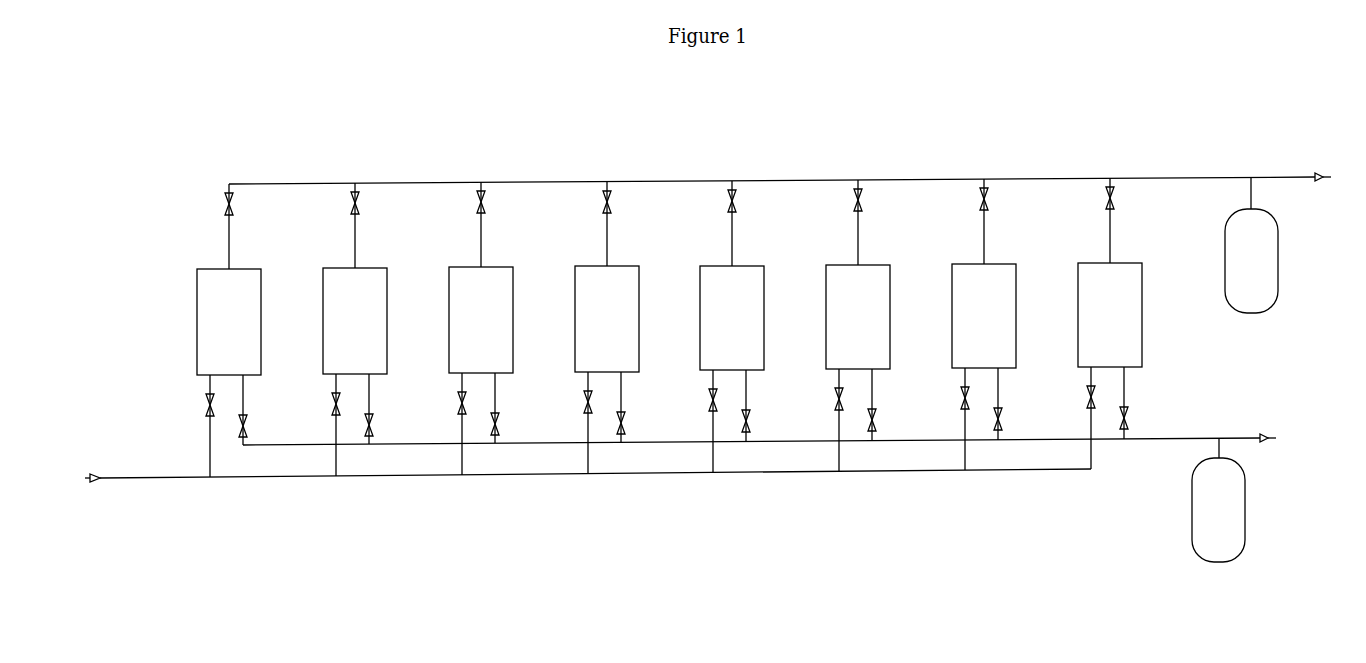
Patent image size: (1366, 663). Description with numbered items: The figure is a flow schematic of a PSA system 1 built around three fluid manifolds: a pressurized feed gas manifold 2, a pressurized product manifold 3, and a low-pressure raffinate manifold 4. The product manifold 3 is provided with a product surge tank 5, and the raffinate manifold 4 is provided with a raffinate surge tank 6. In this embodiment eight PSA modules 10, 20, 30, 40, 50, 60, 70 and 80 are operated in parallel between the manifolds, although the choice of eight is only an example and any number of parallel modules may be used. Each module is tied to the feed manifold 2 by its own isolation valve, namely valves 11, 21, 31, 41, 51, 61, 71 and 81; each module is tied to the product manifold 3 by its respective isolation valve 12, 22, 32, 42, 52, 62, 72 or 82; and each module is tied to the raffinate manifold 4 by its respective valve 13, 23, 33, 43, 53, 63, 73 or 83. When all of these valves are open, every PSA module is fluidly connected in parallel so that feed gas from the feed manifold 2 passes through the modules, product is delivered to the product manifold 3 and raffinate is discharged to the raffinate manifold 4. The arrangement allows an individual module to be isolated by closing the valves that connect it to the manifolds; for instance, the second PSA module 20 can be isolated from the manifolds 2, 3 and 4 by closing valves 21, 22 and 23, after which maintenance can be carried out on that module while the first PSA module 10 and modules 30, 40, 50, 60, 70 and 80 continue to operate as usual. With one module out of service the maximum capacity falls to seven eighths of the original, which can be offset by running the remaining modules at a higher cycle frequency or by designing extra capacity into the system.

The PSA system 1 is at (165, 146).
The pressurized feed gas manifold 2 is at (577, 478).
The pressurized product manifold 3 is at (793, 177).
The low-pressure raffinate manifold 4 is at (770, 439).
The product surge tank 5 is at (1251, 245).
The raffinate surge tank 6 is at (1218, 500).
The first PSA module 10 is at (229, 322).
The isolation valve 11 is at (199, 426).
The isolation valve 12 is at (243, 226).
The valve 13 is at (257, 410).
The second PSA module 20 is at (355, 321).
The isolation valve 21 is at (321, 425).
The isolation valve 22 is at (369, 225).
The valve 23 is at (383, 409).
The PSA module 30 is at (481, 320).
The isolation valve 31 is at (447, 424).
The isolation valve 32 is at (495, 224).
The valve 33 is at (509, 408).
The PSA module 40 is at (607, 319).
The isolation valve 41 is at (573, 423).
The isolation valve 42 is at (621, 224).
The valve 43 is at (635, 407).
The PSA module 50 is at (732, 318).
The isolation valve 51 is at (698, 421).
The isolation valve 52 is at (746, 223).
The valve 53 is at (760, 406).
The PSA module 60 is at (858, 317).
The isolation valve 61 is at (824, 420).
The isolation valve 62 is at (872, 222).
The valve 63 is at (886, 405).
The PSA module 70 is at (984, 316).
The isolation valve 71 is at (950, 419).
The isolation valve 72 is at (998, 221).
The valve 73 is at (1012, 404).
The PSA module 80 is at (1110, 315).
The isolation valve 81 is at (1076, 418).
The isolation valve 82 is at (1124, 220).
The valve 83 is at (1138, 403).